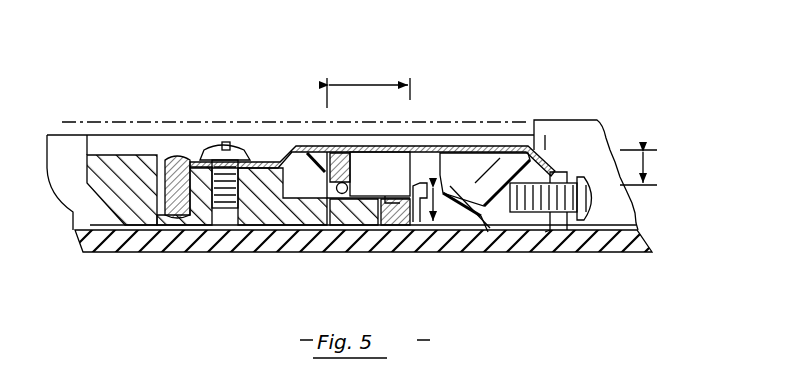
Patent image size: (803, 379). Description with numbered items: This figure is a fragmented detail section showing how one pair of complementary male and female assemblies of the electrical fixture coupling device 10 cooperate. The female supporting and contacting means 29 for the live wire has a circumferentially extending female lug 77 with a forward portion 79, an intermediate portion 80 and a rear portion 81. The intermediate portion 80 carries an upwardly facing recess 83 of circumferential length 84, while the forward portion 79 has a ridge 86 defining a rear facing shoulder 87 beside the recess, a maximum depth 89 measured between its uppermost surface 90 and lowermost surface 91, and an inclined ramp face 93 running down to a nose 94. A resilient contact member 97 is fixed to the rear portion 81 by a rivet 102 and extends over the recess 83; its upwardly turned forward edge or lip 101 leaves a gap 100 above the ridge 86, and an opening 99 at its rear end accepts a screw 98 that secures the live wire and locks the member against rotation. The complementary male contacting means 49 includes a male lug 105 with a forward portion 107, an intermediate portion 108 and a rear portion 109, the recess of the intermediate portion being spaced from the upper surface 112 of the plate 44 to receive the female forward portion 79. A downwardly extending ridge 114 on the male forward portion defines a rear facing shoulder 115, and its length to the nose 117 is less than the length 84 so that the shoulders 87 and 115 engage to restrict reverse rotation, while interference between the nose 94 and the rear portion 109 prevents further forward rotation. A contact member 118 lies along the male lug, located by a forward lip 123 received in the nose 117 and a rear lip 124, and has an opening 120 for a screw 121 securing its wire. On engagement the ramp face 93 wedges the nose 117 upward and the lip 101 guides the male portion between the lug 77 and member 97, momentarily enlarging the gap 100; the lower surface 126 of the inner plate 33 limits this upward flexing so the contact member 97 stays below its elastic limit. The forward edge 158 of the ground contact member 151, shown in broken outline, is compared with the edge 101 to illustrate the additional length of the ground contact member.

The electrical fixture coupling device 10 is at (535, 88).
The female supporting and contacting means 29 is at (120, 212).
The inner plate 33 is at (603, 119).
The plate 44 is at (207, 247).
The contact member of the male assembly 49 is at (515, 258).
The female lug 77 is at (327, 223).
The forward portion 79 is at (477, 225).
The intermediate portion 80 is at (402, 200).
The rear portion 81 is at (270, 217).
The upwardly facing recess 83 is at (336, 188).
The circumferential length 84 is at (383, 85).
The ridge 86 is at (436, 181).
The rear facing shoulder 87 is at (396, 194).
The maximum depth 89 is at (437, 228).
The uppermost surface 90 is at (442, 196).
The lowermost surface 91 is at (455, 252).
The inclined ramp face 93 is at (480, 207).
The nose 94 is at (494, 232).
The resilient contact member 97 is at (284, 147).
The screw 98 is at (223, 143).
The opening 99 is at (292, 140).
The gap 100 is at (648, 176).
The forward edge or lip 101 is at (383, 145).
The rivet 102 is at (170, 158).
The male lug 105 is at (461, 135).
The forward portion 107 is at (380, 174).
The intermediate portion 108 is at (470, 146).
The rear portion 109 is at (560, 178).
The upper surface 112 is at (167, 228).
The downwardly extending ridge 114 is at (352, 210).
The rear facing shoulder 115 is at (428, 176).
The nose 117 is at (326, 212).
The contact member 118 is at (538, 123).
The opening 120 is at (563, 205).
The screw 121 is at (638, 221).
The forward lip 123 is at (326, 182).
The rear lip 124 is at (552, 238).
The lower surface 126 is at (546, 140).
The ground contact member 151 is at (405, 137).
The forward edge 158 is at (447, 147).